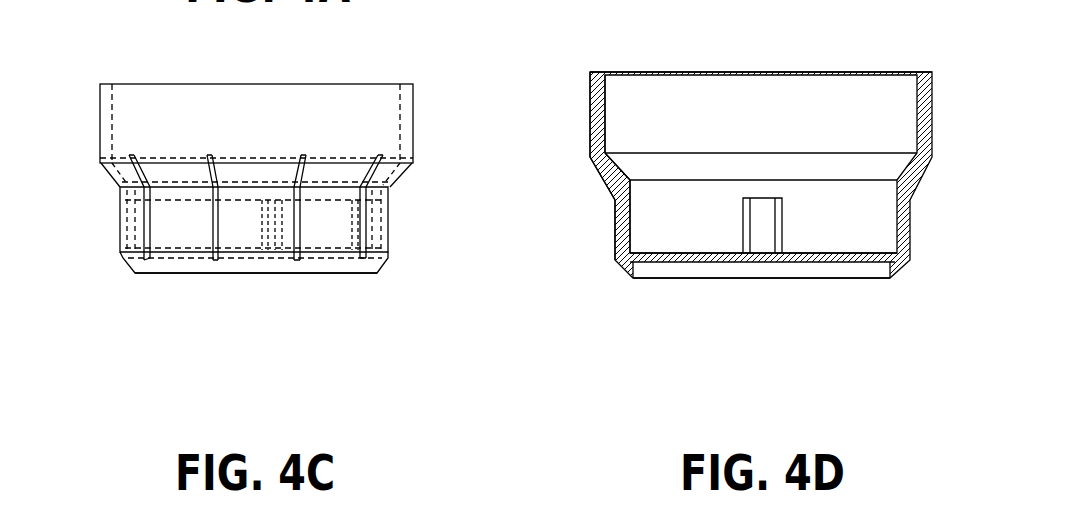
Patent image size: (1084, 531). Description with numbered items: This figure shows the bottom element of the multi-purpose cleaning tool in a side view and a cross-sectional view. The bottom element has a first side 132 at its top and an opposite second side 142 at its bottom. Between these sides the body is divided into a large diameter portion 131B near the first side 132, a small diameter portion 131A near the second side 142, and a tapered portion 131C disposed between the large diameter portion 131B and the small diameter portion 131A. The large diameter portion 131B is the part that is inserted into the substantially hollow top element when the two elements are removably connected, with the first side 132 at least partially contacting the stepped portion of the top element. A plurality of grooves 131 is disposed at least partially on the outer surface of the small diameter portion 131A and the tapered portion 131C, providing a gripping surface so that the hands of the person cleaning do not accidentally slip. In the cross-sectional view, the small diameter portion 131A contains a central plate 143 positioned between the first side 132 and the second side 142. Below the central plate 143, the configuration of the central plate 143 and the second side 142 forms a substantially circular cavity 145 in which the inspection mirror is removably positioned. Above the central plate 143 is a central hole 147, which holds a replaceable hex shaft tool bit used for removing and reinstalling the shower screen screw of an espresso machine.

In FIG. 4C, the grooves 131 is at (168, 214).
In FIG. 4D, the grooves 131 is at (761, 175).
In FIG. 4C, the small diameter portion 131A is at (163, 215).
In FIG. 4D, the small diameter portion 131A is at (639, 213).
In FIG. 4C, the large diameter portion 131B is at (142, 122).
In FIG. 4D, the large diameter portion 131B is at (618, 122).
In FIG. 4C, the tapered portion 131C is at (143, 188).
In FIG. 4D, the tapered portion 131C is at (627, 172).
In FIG. 4C, the first side 132 is at (282, 84).
In FIG. 4D, the first side 132 is at (793, 72).
In FIG. 4C, the second side 142 is at (235, 273).
In FIG. 4D, the second side 142 is at (872, 282).
In FIG. 4D, the central plate 143 is at (703, 258).
In FIG. 4D, the cavity 145 is at (832, 265).
In FIG. 4D, the central hole 147 is at (757, 198).